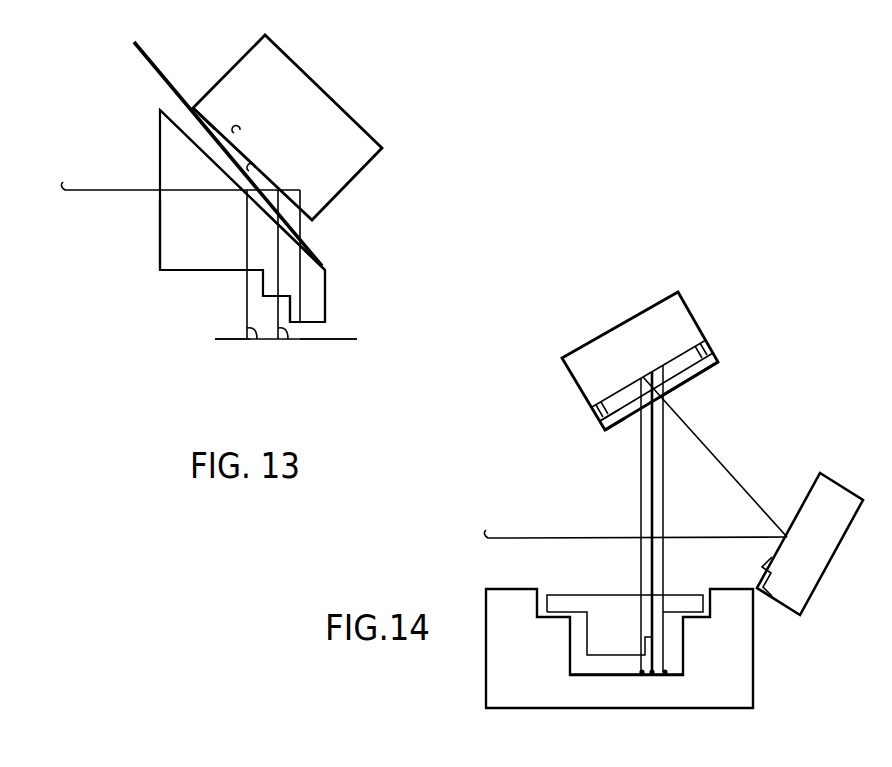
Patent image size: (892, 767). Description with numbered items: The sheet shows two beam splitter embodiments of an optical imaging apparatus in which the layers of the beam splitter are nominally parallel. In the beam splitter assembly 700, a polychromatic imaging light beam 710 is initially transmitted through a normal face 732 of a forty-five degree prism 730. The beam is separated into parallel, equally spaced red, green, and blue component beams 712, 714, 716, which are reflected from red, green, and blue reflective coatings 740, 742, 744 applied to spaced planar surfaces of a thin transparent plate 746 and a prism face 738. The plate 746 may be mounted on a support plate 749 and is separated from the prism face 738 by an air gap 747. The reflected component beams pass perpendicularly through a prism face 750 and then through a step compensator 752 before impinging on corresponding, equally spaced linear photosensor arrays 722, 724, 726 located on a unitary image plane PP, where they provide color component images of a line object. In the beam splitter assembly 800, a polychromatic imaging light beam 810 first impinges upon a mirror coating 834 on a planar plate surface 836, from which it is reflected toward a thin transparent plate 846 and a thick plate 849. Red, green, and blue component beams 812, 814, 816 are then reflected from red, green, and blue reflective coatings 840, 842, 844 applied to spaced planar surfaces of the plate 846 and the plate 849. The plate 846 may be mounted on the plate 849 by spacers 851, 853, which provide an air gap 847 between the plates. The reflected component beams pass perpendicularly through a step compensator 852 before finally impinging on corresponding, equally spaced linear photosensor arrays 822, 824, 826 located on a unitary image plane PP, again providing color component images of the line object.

In FIG. 13, the beam splitter assembly 700 is at (138, 145).
In FIG. 13, the polychromatic imaging light beam 710 is at (116, 192).
In FIG. 13, the red component beam 712 is at (303, 330).
In FIG. 13, the green component beam 714 is at (290, 328).
In FIG. 13, the blue component beam 716 is at (255, 341).
In FIG. 13, the linear photosensor array 722 is at (303, 342).
In FIG. 13, the linear photosensor array 724 is at (282, 341).
In FIG. 13, the linear photosensor array 726 is at (242, 342).
In FIG. 13, the 45-degree prism 730 is at (146, 238).
In FIG. 13, the normal face 732 is at (160, 253).
In FIG. 13, the prism face 738 is at (197, 125).
In FIG. 13, the red reflective coating 740 is at (240, 130).
In FIG. 13, the green reflective coating 742 is at (255, 168).
In FIG. 13, the blue reflective coating 744 is at (303, 247).
In FIG. 13, the thin transparent plate 746 is at (192, 108).
In FIG. 13, the air gap 747 is at (212, 139).
In FIG. 13, the support plate 749 is at (300, 51).
In FIG. 13, the prism face 750 is at (187, 270).
In FIG. 13, the step compensator 752 is at (326, 282).
In FIG. 13, the image plane PP is at (227, 338).
In FIG. 14, the image plane PP is at (570, 673).
In FIG. 14, the beam splitter assembly 800 is at (540, 417).
In FIG. 14, the polychromatic imaging light beam 810 is at (540, 538).
In FIG. 14, the red component beam 812 is at (641, 507).
In FIG. 14, the green component beam 814 is at (652, 470).
In FIG. 14, the blue component beam 816 is at (663, 505).
In FIG. 14, the linear photosensor array 822 is at (641, 675).
In FIG. 14, the linear photosensor array 824 is at (653, 676).
In FIG. 14, the linear photosensor array 826 is at (667, 676).
In FIG. 14, the mirror coating 834 is at (803, 502).
In FIG. 14, the planar plate surface 836 is at (777, 600).
In FIG. 14, the red reflective coating 840 is at (685, 346).
In FIG. 14, the green reflective coating 842 is at (703, 343).
In FIG. 14, the blue reflective coating 844 is at (690, 380).
In FIG. 14, the thin transparent plate 846 is at (603, 432).
In FIG. 14, the air gap 847 is at (600, 423).
In FIG. 14, the thick plate 849 is at (619, 327).
In FIG. 14, the spacer 851 is at (594, 410).
In FIG. 14, the step compensator 852 is at (560, 636).
In FIG. 14, the spacer 853 is at (690, 340).